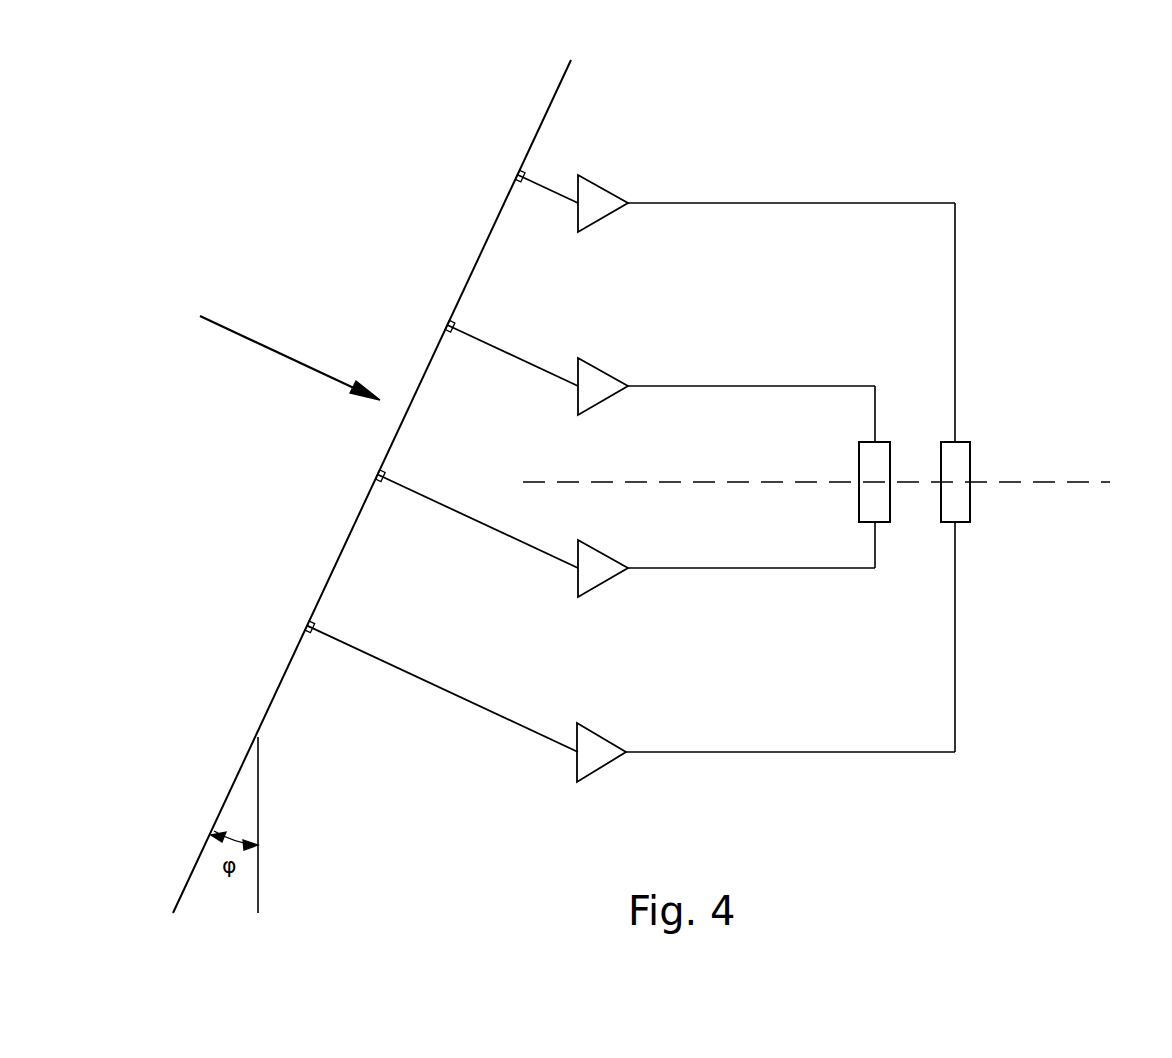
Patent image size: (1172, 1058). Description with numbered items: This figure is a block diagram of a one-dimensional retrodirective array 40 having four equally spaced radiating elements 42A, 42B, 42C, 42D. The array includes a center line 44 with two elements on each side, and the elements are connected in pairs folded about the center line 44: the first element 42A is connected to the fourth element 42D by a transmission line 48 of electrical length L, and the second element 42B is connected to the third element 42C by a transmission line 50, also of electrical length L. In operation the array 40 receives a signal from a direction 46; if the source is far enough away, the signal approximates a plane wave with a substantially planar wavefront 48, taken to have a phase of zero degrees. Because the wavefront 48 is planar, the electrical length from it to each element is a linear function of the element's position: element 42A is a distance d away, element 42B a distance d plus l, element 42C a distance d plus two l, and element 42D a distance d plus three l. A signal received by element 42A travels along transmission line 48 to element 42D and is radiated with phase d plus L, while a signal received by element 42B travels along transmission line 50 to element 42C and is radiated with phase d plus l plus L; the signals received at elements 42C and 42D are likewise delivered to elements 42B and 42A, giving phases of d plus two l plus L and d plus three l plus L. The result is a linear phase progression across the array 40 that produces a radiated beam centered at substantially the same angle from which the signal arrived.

The retrodirective array 40 is at (843, 152).
The first radiating element 42A is at (592, 196).
The second radiating element 42B is at (596, 381).
The third radiating element 42C is at (598, 565).
The fourth radiating element 42D is at (602, 740).
The center line 44 is at (1018, 483).
The direction 46 is at (248, 340).
The transmission line / planar wavefront 48 is at (553, 104).
The transmission line 50 is at (884, 442).